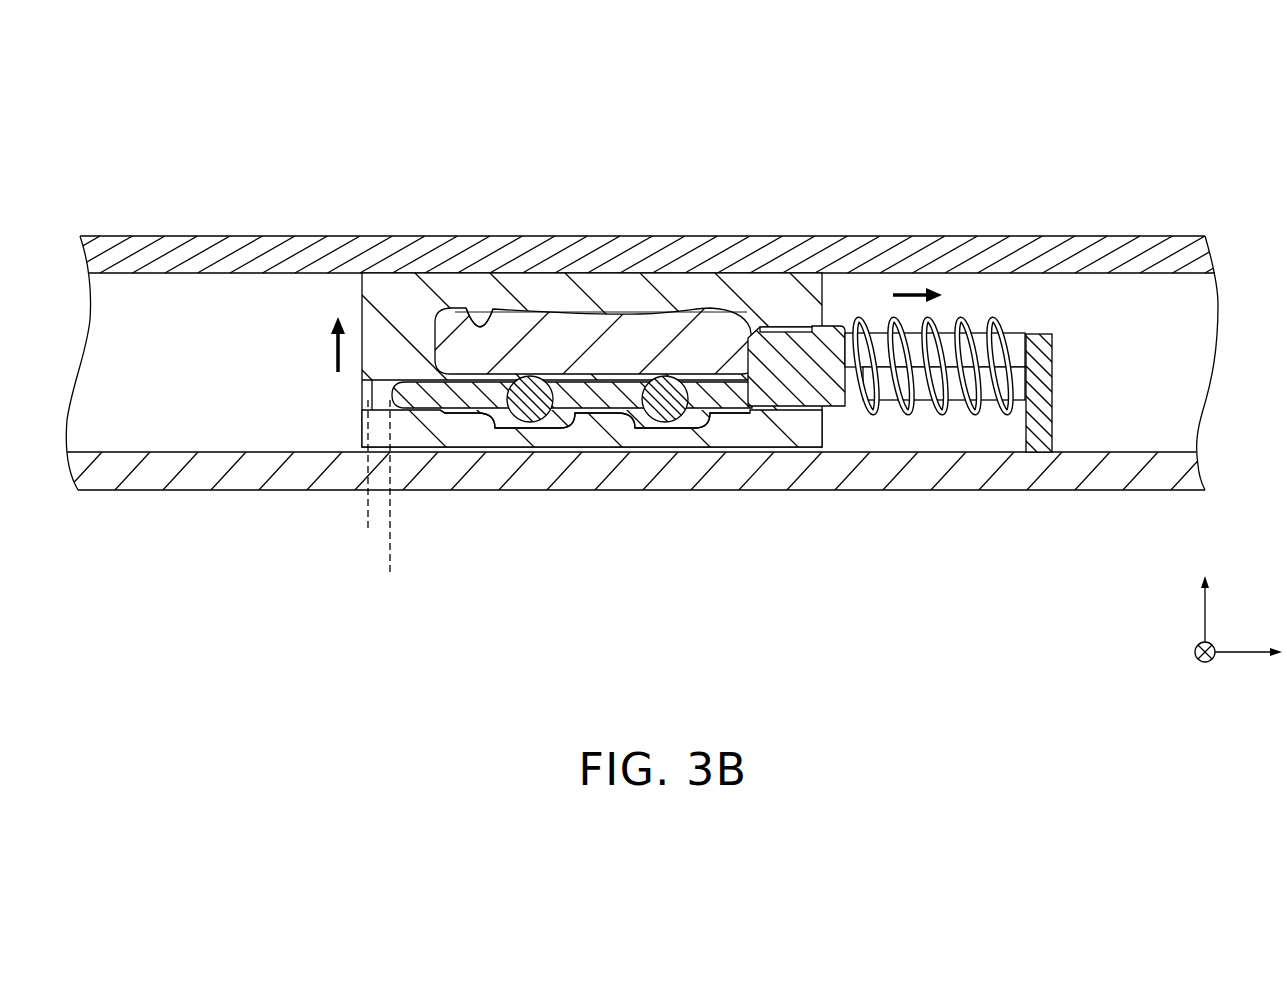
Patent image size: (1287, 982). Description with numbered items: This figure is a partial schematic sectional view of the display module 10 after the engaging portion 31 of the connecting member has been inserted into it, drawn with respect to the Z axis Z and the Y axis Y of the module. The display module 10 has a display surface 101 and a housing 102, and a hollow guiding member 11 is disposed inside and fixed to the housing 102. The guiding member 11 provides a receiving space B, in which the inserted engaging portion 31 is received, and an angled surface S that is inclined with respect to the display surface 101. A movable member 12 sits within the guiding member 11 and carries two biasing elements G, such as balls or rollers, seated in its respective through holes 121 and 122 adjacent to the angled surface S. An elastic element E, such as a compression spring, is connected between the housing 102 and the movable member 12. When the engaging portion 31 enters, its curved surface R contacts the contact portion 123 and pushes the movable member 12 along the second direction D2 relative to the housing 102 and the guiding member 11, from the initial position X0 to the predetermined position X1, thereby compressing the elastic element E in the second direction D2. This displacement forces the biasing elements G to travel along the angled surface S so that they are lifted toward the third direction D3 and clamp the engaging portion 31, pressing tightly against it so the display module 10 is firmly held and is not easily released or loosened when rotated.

The display module 10 is at (1231, 172).
The display surface 101 is at (1037, 236).
The housing 102 is at (1040, 470).
The guiding member 11 is at (398, 293).
The movable member 12 is at (608, 340).
The through hole 121 is at (538, 340).
The through hole 122 is at (680, 345).
The contact portion 123 is at (772, 353).
The engaging portion 31 is at (716, 335).
The receiving space B is at (479, 322).
The biasing elements G is at (530, 400).
The angled surface S is at (536, 412).
The curved surface R is at (752, 408).
The elastic element E is at (944, 405).
The initial position X0 is at (363, 482).
The predetermined position X1 is at (390, 501).
The second direction D2 is at (897, 295).
The third direction D3 is at (317, 344).
The Z axis Z is at (1205, 592).
The Y axis Y is at (1225, 665).